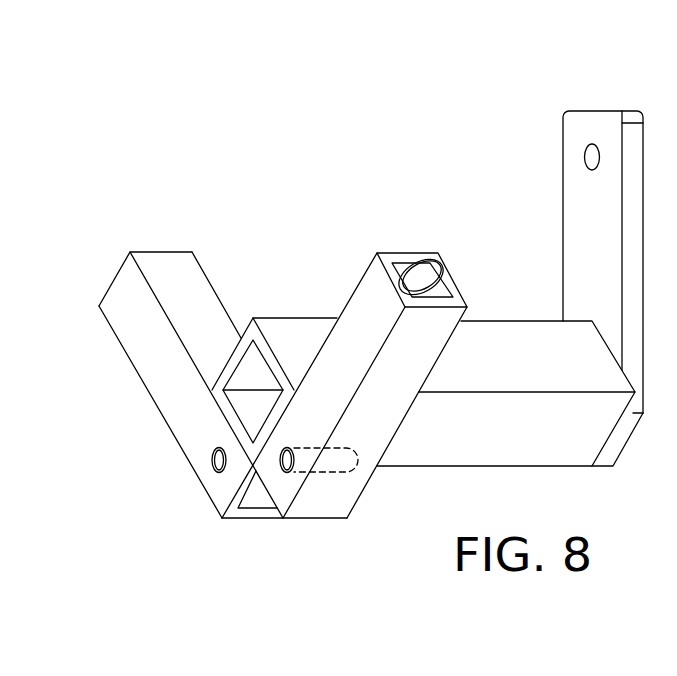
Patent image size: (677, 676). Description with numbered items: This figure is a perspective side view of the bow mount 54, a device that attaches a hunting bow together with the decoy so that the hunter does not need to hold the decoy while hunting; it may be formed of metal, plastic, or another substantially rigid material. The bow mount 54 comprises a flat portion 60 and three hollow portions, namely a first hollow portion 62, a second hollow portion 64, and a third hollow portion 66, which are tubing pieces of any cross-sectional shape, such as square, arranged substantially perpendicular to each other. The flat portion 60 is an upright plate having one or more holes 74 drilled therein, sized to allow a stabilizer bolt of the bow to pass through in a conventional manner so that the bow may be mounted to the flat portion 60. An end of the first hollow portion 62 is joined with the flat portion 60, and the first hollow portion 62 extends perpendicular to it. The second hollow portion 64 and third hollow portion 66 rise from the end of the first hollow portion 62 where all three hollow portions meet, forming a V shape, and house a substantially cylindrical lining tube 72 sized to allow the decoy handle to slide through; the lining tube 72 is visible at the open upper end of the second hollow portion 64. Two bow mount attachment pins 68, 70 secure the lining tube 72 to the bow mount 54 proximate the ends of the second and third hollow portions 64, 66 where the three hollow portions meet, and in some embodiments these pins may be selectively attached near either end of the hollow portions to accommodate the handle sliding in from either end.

The bow mount 54 is at (332, 172).
The flat portion 60 is at (580, 128).
The first hollow portion 62 is at (493, 448).
The second hollow portion 64 is at (363, 305).
The third hollow portion 66 is at (133, 335).
The bow mount attachment pin 68 is at (353, 468).
The bow mount attachment pin 70 is at (212, 460).
The lining tube 72 is at (430, 279).
The hole 74 is at (585, 158).